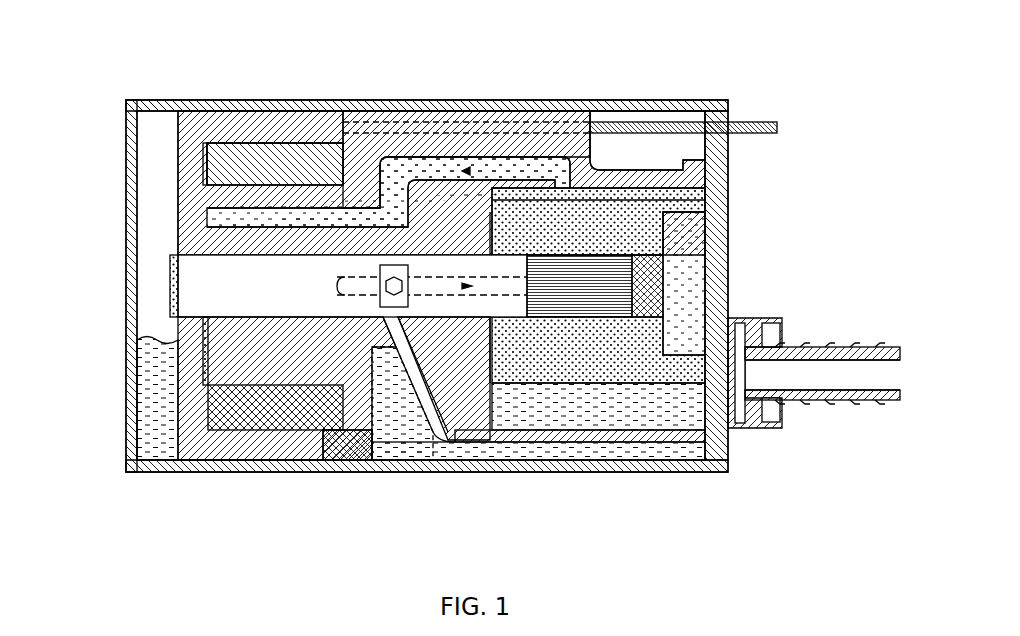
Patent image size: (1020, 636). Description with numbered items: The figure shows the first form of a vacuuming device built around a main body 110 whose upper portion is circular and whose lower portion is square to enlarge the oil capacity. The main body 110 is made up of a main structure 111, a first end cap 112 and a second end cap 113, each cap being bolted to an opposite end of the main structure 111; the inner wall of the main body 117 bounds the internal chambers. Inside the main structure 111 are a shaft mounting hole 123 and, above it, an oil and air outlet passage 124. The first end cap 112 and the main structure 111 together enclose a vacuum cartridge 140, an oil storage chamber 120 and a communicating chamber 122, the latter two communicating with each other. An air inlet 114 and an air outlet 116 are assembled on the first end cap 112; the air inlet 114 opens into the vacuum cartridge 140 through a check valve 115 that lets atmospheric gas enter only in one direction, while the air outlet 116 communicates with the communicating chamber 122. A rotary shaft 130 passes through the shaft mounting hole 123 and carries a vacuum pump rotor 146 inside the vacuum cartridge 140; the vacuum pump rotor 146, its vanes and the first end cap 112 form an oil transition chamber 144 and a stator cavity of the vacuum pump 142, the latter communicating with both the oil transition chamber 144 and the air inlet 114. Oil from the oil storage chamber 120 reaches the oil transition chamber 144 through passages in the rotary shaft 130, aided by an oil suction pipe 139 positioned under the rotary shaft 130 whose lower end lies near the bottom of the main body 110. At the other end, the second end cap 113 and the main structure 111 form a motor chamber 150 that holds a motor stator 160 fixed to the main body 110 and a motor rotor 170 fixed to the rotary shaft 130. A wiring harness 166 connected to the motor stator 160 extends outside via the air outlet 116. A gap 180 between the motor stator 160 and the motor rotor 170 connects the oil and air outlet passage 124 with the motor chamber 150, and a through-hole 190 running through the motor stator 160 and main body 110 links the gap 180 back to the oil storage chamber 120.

The main body 110 is at (183, 98).
The main structure 111 is at (428, 165).
The first end cap 112 is at (727, 190).
The second end cap 113 is at (128, 192).
The air inlet 114 is at (750, 430).
The check valve 115 is at (812, 352).
The air outlet 116 is at (722, 99).
The inner wall of the main body 117 is at (655, 428).
The oil storage chamber 120 is at (500, 472).
The communicating chamber 122 is at (642, 145).
The shaft mounting hole 123 is at (377, 255).
The oil and air outlet passage 124 is at (537, 167).
The rotary shaft 130 is at (163, 287).
The oil suction pipe 139 is at (416, 440).
The vacuum cartridge 140 is at (596, 444).
The stator cavity of the vacuum pump 142 is at (626, 410).
The oil transition chamber 144 is at (690, 285).
The vacuum pump rotor 146 is at (677, 438).
The motor chamber 150 is at (140, 420).
The motor stator 160 is at (352, 128).
The wiring harness 166 is at (683, 122).
The motor rotor 170 is at (266, 125).
The gap 180 is at (220, 462).
The through-hole 190 is at (340, 462).